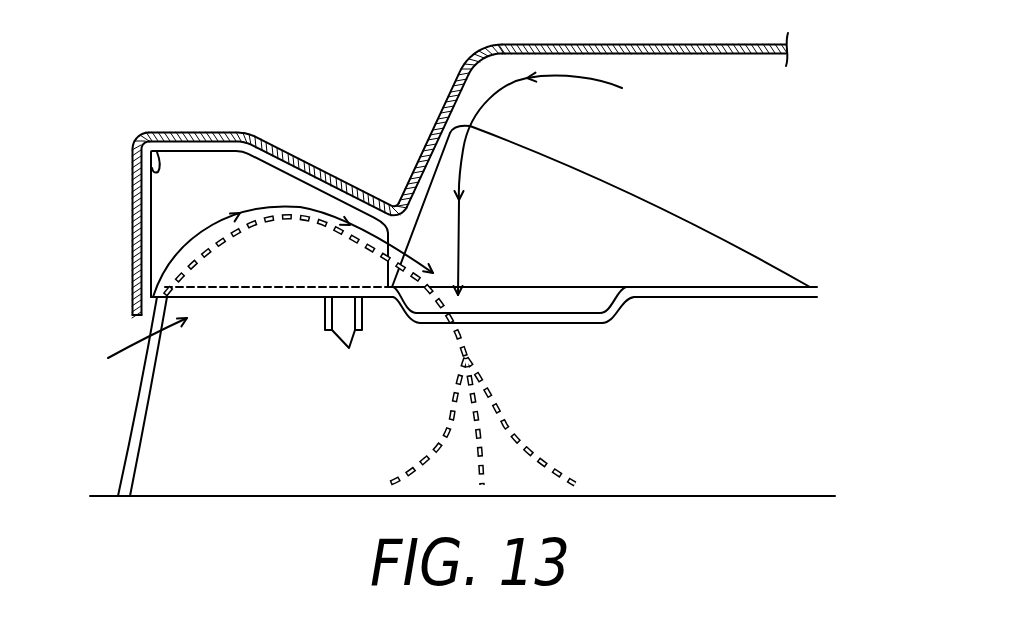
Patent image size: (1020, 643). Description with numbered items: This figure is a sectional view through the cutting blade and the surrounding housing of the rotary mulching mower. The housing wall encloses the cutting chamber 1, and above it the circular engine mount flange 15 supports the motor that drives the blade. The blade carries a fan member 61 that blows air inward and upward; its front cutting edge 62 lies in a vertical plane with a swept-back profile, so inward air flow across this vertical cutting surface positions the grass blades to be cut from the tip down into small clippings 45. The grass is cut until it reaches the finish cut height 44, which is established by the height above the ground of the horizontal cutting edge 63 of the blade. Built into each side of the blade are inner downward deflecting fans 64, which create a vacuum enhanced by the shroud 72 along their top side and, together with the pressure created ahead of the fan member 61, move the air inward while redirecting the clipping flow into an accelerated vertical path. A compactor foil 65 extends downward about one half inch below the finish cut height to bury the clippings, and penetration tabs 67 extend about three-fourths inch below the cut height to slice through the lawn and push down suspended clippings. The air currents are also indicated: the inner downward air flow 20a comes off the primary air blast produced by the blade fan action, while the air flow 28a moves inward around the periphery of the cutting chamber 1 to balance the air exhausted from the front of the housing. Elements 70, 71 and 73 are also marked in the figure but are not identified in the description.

The cutting chamber 1 is at (728, 140).
The circular engine mount flange 15 is at (645, 45).
The inner downward air flow 20a is at (214, 238).
The inward air flow 28a is at (138, 348).
The finish cut height 44 is at (148, 365).
The small clippings 45 is at (190, 278).
The fan member 61 is at (263, 158).
The front cutting edge 62 is at (157, 152).
The horizontal cutting edge 63 is at (242, 298).
The inner downward deflecting fans 64 is at (642, 197).
The compactor foil 65 is at (532, 324).
The penetration tabs 67 is at (349, 348).
The front wall 70 is at (131, 215).
The upper wall 71 is at (221, 132).
The shroud 72 is at (423, 172).
The air flow 73 is at (470, 152).